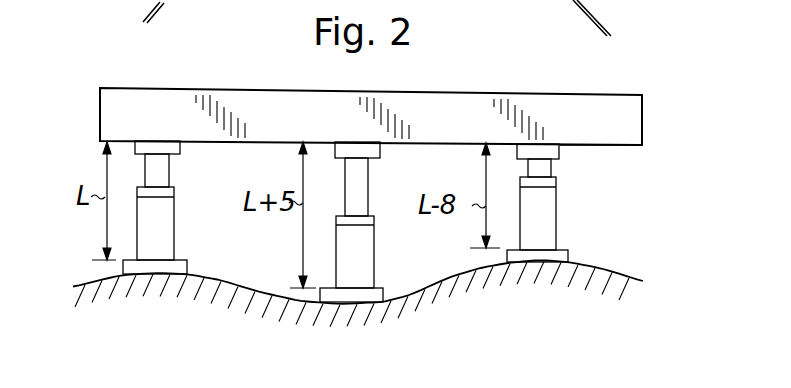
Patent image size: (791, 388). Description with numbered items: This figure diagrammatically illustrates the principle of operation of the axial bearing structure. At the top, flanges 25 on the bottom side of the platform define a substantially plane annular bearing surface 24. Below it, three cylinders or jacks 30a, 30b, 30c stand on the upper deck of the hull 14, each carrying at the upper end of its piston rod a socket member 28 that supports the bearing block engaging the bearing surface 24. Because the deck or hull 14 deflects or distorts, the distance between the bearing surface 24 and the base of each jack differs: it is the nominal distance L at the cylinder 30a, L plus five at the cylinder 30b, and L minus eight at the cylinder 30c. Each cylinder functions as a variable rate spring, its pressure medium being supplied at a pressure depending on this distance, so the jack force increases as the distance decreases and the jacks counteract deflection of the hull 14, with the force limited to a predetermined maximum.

The flanges 25 is at (642, 118).
The annular bearing surface 24 is at (617, 146).
The socket member 28 is at (173, 148).
The cylinder or jack 30a is at (174, 222).
The cylinder or jack 30b is at (374, 243).
The cylinder or jack 30c is at (556, 228).
The hull 14 is at (495, 265).